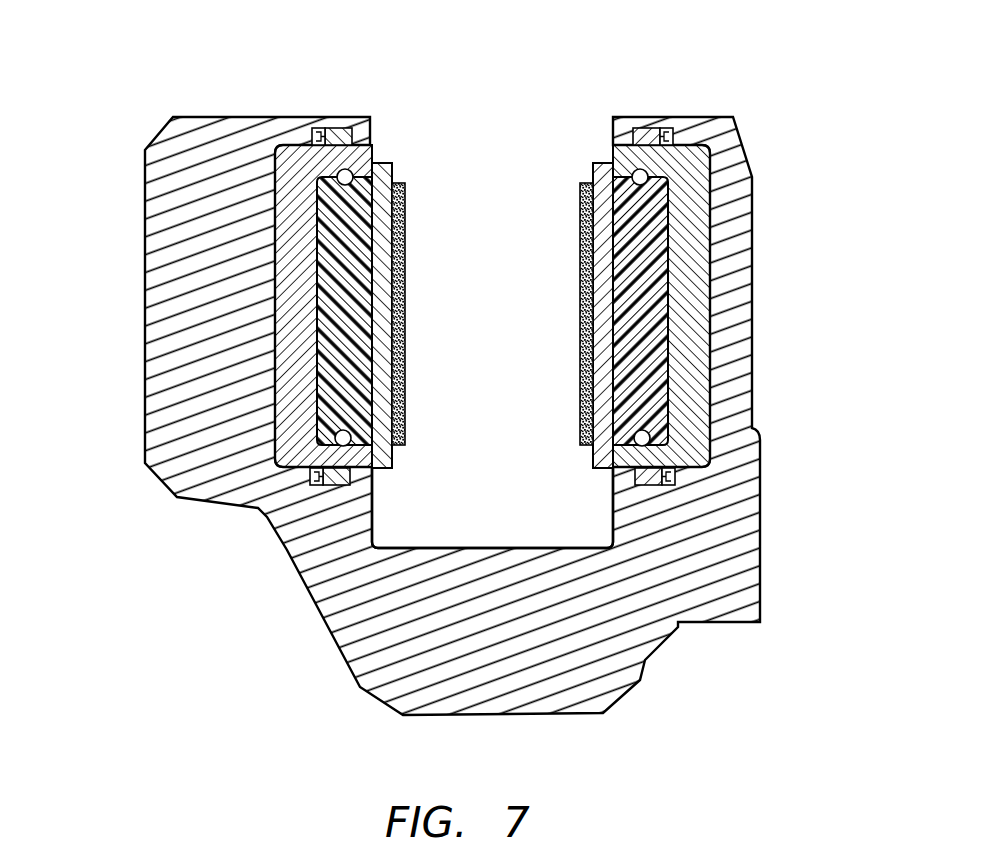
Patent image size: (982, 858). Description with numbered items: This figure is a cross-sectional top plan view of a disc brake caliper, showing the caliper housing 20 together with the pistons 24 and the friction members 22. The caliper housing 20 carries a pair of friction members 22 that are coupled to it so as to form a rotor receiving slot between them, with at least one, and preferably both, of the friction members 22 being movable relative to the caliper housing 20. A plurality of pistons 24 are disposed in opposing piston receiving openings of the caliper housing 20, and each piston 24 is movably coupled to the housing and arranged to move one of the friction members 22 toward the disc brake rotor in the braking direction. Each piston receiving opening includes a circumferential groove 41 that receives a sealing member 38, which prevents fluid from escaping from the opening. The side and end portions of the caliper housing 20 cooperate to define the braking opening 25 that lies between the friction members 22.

The caliper housing 20 is at (742, 545).
The friction members 22 is at (580, 283).
The pistons 24 is at (287, 165).
The braking opening 25 is at (480, 428).
The sealing member 38 is at (337, 128).
The circumferential groove 41 is at (315, 128).